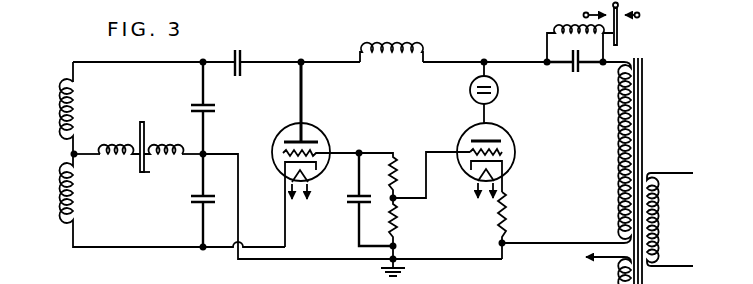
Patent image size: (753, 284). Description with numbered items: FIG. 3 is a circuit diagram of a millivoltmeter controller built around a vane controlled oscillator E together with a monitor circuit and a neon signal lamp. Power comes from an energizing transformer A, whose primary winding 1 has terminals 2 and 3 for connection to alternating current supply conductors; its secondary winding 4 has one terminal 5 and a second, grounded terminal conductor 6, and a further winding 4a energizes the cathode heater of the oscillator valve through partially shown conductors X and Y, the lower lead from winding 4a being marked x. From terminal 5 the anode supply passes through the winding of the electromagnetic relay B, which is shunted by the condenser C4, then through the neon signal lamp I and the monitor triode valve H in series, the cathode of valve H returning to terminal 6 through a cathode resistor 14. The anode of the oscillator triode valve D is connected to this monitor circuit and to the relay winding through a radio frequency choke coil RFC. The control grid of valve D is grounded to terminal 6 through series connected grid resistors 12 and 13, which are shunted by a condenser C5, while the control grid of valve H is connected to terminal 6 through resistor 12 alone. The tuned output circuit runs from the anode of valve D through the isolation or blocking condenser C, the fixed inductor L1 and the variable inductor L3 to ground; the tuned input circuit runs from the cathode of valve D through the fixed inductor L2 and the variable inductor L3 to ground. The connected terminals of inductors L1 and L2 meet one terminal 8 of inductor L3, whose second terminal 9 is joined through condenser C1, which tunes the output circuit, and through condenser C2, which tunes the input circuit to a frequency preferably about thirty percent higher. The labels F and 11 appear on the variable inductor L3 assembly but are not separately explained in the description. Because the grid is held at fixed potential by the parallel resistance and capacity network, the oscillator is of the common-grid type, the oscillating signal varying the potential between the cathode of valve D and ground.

The oscillator E is at (46, 94).
The fixed inductor L1 is at (70, 109).
The fixed inductor L2 is at (70, 193).
The variable inductor L3 is at (133, 163).
The piezoelectric crystal plate F is at (146, 131).
The terminal of variable inductor 8 is at (85, 153).
The second terminal of variable inductor 9 is at (194, 153).
The crystal electrode lead 11 is at (149, 175).
The isolation condenser C is at (236, 50).
The condenser C1 is at (216, 109).
The condenser C2 is at (189, 199).
The oscillator triode valve D is at (318, 121).
The conductor X is at (383, 200).
The conductor Y is at (397, 200).
The radio frequency choke coil RFC is at (417, 47).
The condenser C5 is at (346, 197).
The grid resistor 13 is at (396, 160).
The grid resistor 12 is at (398, 220).
The neon signal lamp I is at (499, 85).
The monitor triode valve H is at (520, 130).
The cathode resistor 14 is at (508, 222).
The terminal conductor 6 is at (590, 242).
The electromagnetic relay B is at (539, 34).
The condenser C4 is at (575, 73).
The energizing transformer A is at (659, 71).
The terminal of secondary winding 5 is at (613, 80).
The secondary winding 4 is at (620, 151).
The conductor x is at (594, 259).
The heater winding 4a is at (620, 276).
The primary winding 1 is at (659, 221).
The primary terminal 2 is at (688, 266).
The primary terminal 3 is at (683, 173).